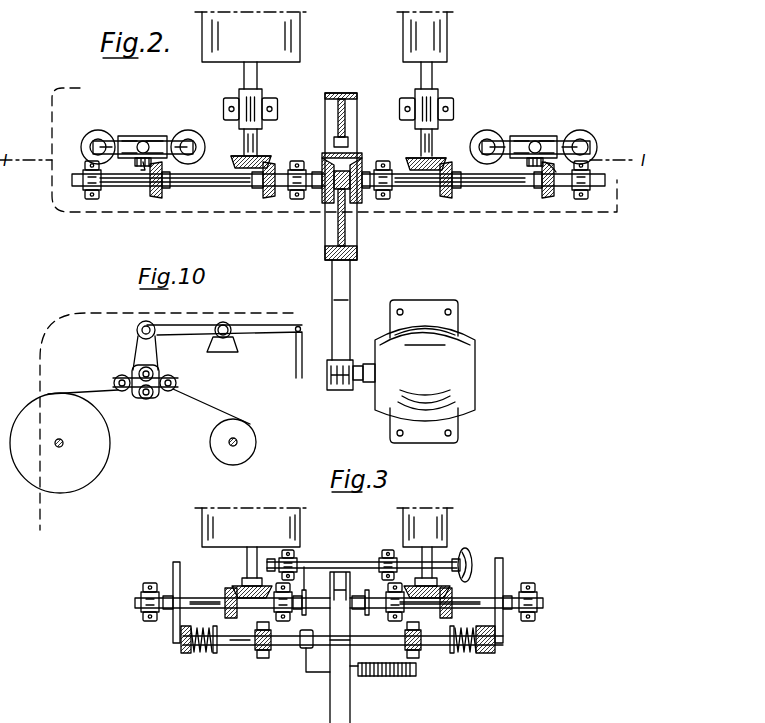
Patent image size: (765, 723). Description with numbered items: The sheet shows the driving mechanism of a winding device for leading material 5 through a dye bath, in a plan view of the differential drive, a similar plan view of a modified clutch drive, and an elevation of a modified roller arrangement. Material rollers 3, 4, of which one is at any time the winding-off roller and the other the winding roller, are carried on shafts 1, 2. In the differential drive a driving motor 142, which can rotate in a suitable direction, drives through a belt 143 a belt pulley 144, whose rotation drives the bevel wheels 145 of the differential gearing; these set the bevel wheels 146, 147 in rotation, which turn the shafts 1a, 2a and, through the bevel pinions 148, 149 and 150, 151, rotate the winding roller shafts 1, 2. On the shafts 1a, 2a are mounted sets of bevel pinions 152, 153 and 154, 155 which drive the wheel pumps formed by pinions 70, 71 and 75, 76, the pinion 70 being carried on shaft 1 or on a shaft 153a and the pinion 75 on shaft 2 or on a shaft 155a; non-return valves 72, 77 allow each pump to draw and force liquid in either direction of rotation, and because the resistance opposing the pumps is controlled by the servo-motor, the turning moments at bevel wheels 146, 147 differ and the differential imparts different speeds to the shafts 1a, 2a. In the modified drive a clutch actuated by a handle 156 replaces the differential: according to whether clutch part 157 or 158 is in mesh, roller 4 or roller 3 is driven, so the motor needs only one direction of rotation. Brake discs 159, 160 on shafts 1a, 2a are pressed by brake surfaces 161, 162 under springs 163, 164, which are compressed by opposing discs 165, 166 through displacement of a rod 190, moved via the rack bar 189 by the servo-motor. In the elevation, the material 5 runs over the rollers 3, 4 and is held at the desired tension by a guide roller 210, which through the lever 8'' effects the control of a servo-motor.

In FIG. 2, the shaft 1 is at (258, 82).
In FIG. 10, the shaft 1 is at (66, 444).
In FIG. 3, the shaft 1 is at (252, 562).
In FIG. 2, the shaft 2 is at (433, 82).
In FIG. 10, the shaft 2 is at (229, 444).
In FIG. 3, the shaft 2 is at (427, 562).
In FIG. 2, the material roller 3 is at (296, 45).
In FIG. 10, the material roller 3 is at (96, 467).
In FIG. 3, the material roller 3 is at (300, 527).
In FIG. 2, the material roller 4 is at (440, 47).
In FIG. 10, the material roller 4 is at (222, 462).
In FIG. 3, the material roller 4 is at (447, 527).
In FIG. 10, the material 5 is at (94, 388).
In FIG. 2, the shaft 1a is at (202, 188).
In FIG. 3, the shaft 1a is at (195, 602).
In FIG. 2, the shaft 2a is at (489, 190).
In FIG. 3, the shaft 2a is at (473, 602).
In FIG. 10, the lever 8'' is at (219, 332).
In FIG. 2, the pinion 70 is at (149, 137).
In FIG. 2, the pinion 71 is at (154, 127).
In FIG. 2, the non-return valves 72 is at (100, 142).
In FIG. 2, the pinion 75 is at (530, 135).
In FIG. 2, the pinion 76 is at (535, 136).
In FIG. 2, the non-return valves 77 is at (588, 135).
In FIG. 2, the driving motor 142 is at (470, 344).
In FIG. 2, the belt 143 is at (348, 290).
In FIG. 3, the belt 143 is at (338, 688).
In FIG. 2, the belt pulley 144 is at (352, 222).
In FIG. 2, the bevel wheels 145 is at (344, 153).
In FIG. 2, the bevel wheel 146 is at (353, 160).
In FIG. 2, the bevel wheel 147 is at (323, 162).
In FIG. 2, the bevel pinion 148 is at (270, 194).
In FIG. 3, the bevel pinion 148 is at (231, 603).
In FIG. 2, the bevel pinion 149 is at (242, 160).
In FIG. 3, the bevel pinion 149 is at (252, 588).
In FIG. 2, the bevel pinion 150 is at (444, 193).
In FIG. 3, the bevel pinion 150 is at (446, 603).
In FIG. 2, the bevel pinion 151 is at (443, 163).
In FIG. 3, the bevel pinion 151 is at (427, 588).
In FIG. 2, the bevel pinion 152 is at (158, 172).
In FIG. 2, the bevel pinion 153 is at (153, 185).
In FIG. 2, the shaft 153a is at (138, 168).
In FIG. 2, the bevel pinion 154 is at (546, 194).
In FIG. 2, the bevel pinion 155 is at (533, 173).
In FIG. 2, the shaft 155a is at (551, 165).
In FIG. 3, the handle 156 is at (470, 556).
In FIG. 3, the clutch part 157 is at (366, 590).
In FIG. 3, the clutch part 158 is at (308, 590).
In FIG. 3, the brake disc 159 is at (173, 570).
In FIG. 3, the brake disc 160 is at (503, 570).
In FIG. 3, the brake surface 161 is at (182, 648).
In FIG. 3, the brake surface 162 is at (493, 652).
In FIG. 3, the spring 163 is at (205, 652).
In FIG. 3, the spring 164 is at (473, 654).
In FIG. 3, the opposing disc 165 is at (216, 650).
In FIG. 3, the opposing disc 166 is at (452, 654).
In FIG. 3, the rack bar 189 is at (368, 678).
In FIG. 3, the rod 190 is at (293, 647).
In FIG. 10, the guide roller 210 is at (134, 345).